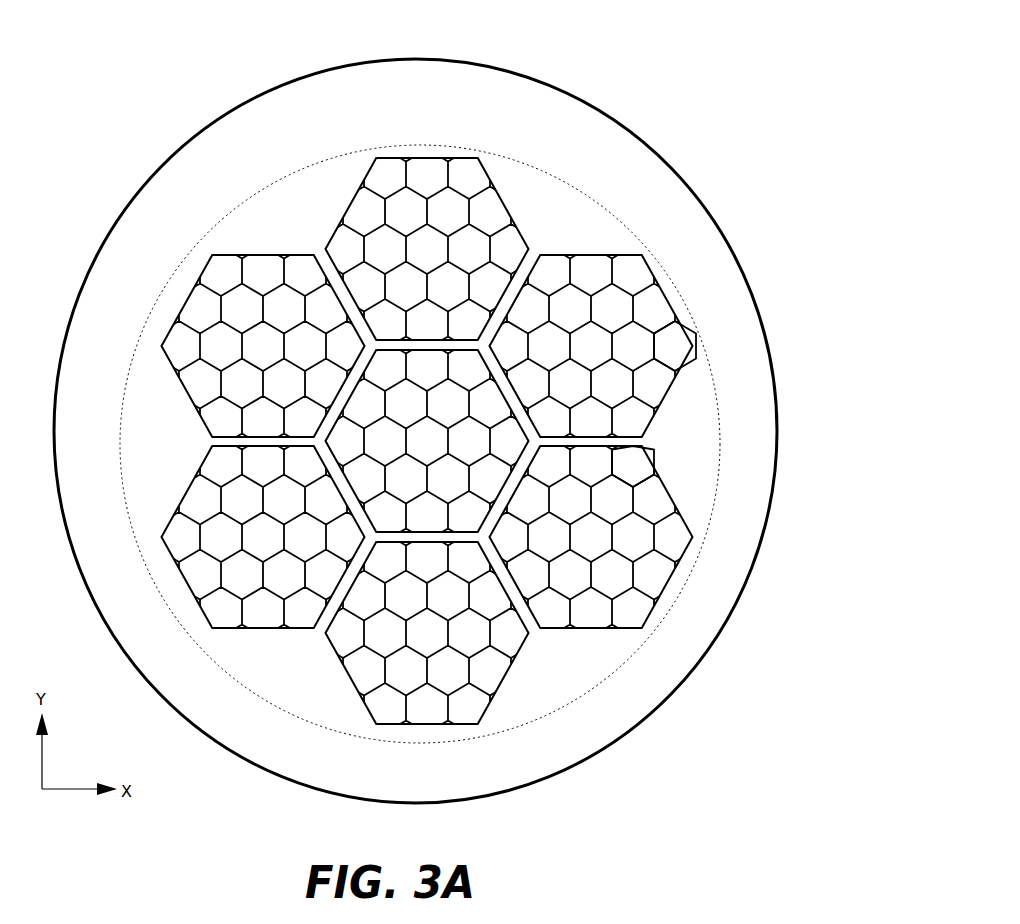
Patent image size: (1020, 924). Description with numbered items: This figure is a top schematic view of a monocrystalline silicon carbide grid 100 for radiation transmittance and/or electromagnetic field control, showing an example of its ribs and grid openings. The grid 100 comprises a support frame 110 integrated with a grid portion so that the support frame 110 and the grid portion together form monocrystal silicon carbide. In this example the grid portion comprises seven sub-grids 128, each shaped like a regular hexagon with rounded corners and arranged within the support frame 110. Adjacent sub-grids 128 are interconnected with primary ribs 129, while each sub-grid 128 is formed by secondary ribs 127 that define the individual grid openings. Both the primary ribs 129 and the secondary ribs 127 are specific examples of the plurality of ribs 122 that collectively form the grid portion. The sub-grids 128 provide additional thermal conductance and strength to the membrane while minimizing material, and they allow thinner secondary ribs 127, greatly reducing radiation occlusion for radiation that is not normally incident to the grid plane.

The grid 100 is at (645, 91).
The support frame 110 is at (664, 197).
The plurality of ribs 122 is at (511, 441).
The secondary ribs 127 is at (656, 345).
The sub-grids 128 is at (678, 289).
The primary ribs 129 is at (630, 447).